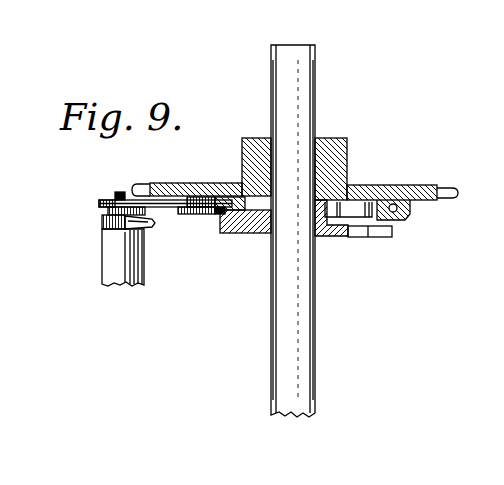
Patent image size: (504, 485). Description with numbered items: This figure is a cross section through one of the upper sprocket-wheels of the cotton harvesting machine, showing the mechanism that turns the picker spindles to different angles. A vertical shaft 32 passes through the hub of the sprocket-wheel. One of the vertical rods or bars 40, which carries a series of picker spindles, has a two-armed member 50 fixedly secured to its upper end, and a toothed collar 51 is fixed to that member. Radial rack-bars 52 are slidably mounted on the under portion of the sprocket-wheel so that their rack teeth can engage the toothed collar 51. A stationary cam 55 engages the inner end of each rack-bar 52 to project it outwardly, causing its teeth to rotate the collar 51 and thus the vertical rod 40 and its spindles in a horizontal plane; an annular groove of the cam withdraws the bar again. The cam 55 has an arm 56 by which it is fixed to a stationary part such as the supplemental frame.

The shaft 32 is at (316, 116).
The vertical rod or bar 40 is at (116, 257).
The two-armed member 50 is at (150, 208).
The toothed collar 51 is at (118, 192).
The radial rack-bars 52 is at (200, 215).
The cam 55 is at (258, 220).
The arm 56 is at (368, 237).